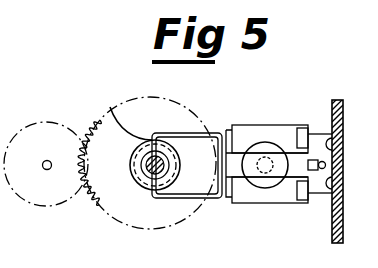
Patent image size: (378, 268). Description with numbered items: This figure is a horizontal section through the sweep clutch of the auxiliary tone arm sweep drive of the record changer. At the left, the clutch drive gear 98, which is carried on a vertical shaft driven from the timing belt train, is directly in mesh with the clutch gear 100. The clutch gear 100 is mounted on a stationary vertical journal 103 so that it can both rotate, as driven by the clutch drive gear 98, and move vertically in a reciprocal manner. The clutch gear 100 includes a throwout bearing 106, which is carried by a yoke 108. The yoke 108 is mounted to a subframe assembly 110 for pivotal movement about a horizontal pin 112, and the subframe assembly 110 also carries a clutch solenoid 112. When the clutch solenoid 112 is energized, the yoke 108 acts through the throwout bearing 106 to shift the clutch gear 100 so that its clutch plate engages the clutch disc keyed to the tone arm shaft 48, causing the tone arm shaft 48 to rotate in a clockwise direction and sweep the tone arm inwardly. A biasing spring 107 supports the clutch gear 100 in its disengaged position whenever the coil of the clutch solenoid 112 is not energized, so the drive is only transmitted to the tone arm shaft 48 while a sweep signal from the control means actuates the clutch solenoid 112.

The tone arm shaft 48 is at (148, 174).
The clutch drive gear 98 is at (58, 123).
The clutch gear 100 is at (171, 108).
The stationary vertical journal 103 is at (146, 190).
The throwout bearing 106 is at (101, 129).
The biasing spring 107 is at (313, 140).
The yoke 108 is at (252, 170).
The subframe assembly 110 is at (285, 197).
The clutch solenoid 112 is at (262, 141).